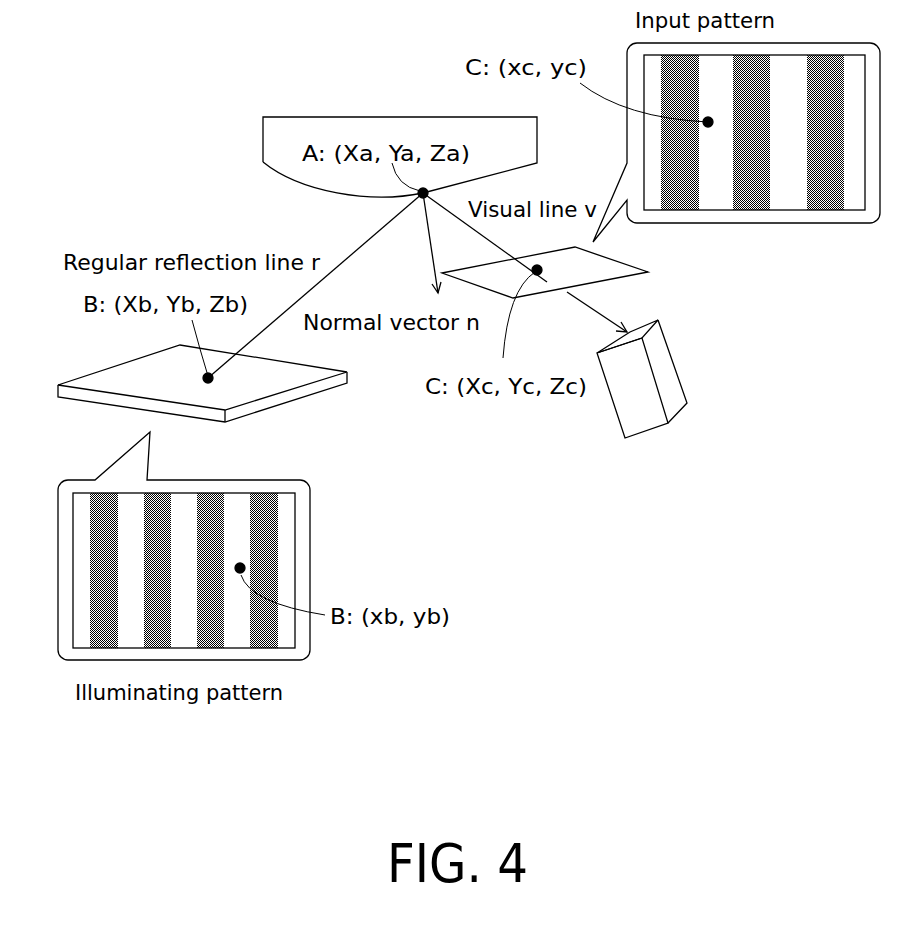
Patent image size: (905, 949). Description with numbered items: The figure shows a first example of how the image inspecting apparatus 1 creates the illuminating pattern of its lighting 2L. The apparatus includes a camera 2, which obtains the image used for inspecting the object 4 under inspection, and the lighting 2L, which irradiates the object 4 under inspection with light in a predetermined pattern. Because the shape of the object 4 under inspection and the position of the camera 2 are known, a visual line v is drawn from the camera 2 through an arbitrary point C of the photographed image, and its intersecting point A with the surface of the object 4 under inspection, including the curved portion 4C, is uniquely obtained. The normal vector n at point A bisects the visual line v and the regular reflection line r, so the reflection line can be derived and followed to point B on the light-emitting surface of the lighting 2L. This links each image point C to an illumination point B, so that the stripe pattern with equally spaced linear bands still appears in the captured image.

The image inspecting apparatus 1 is at (82, 210).
The camera 2 is at (663, 372).
The lighting 2L is at (58, 392).
The object under inspection 4 is at (360, 171).
The curved portion 4C is at (283, 177).